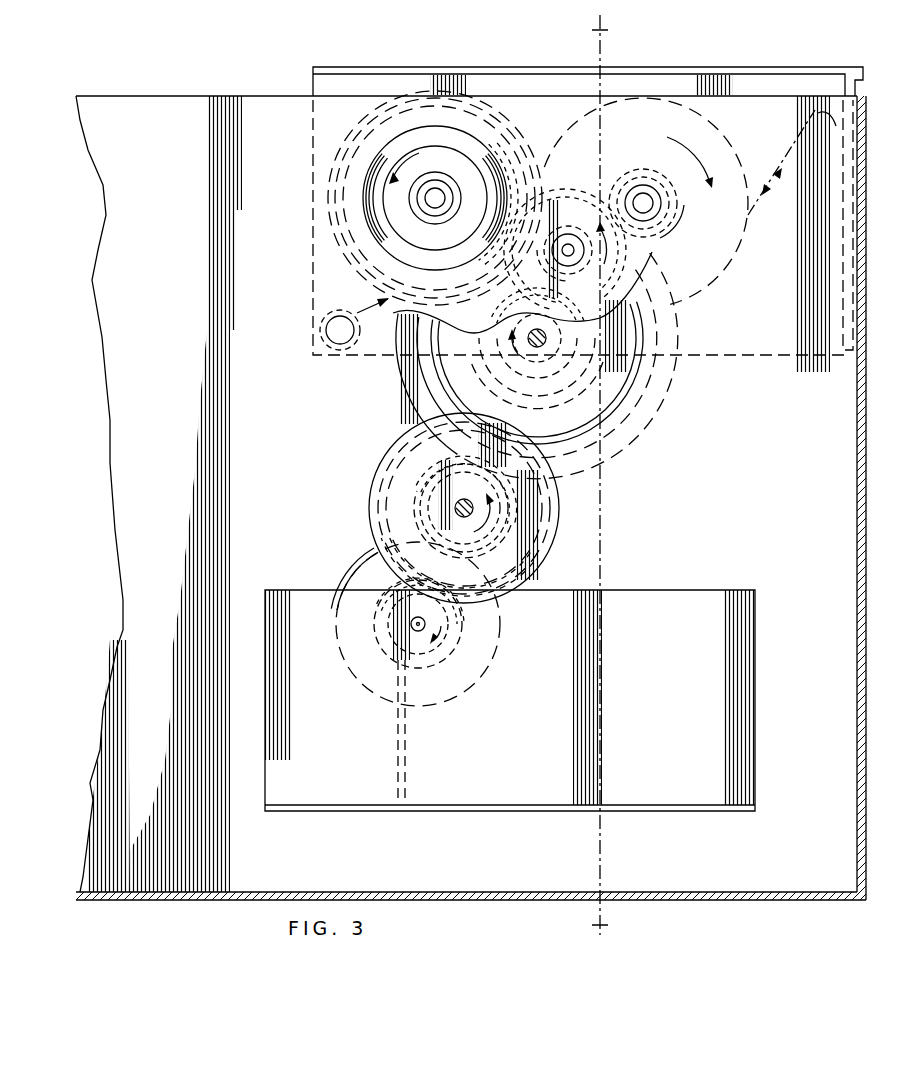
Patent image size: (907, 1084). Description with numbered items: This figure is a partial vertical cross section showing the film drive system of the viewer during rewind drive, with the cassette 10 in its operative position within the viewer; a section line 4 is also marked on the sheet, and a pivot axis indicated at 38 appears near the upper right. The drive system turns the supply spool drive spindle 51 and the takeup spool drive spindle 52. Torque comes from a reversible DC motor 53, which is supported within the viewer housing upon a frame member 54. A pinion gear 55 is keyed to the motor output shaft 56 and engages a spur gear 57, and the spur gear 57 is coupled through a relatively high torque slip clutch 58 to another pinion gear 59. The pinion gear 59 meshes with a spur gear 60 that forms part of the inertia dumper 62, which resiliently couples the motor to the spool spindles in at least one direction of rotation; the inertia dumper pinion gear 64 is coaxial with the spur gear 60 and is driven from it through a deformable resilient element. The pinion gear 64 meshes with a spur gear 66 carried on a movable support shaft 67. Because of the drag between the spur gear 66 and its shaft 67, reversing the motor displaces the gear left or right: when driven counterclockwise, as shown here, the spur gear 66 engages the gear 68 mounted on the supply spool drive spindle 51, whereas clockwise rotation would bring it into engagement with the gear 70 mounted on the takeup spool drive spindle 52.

The section line 4- 4 is at (588, 28).
The cassette 10 is at (814, 62).
The pivot axis 38 is at (727, 225).
The supply spool drive spindle 51 is at (640, 197).
The takeup spool drive spindle 52 is at (440, 198).
The reversible DC motor 53 is at (352, 568).
The frame member 54 is at (708, 633).
The pinion gear 55 is at (362, 273).
The motor output shaft 56 is at (411, 625).
The spur gear 57 is at (537, 537).
The slip clutch 58 is at (574, 503).
The pinion gear 59 is at (410, 498).
The spur gear 60 is at (645, 404).
The inertia dumper 62 is at (396, 418).
The pinion gear 64 is at (537, 372).
The spur gear 66 is at (530, 272).
The movable support shaft 67 is at (541, 274).
The gear 68 is at (655, 210).
The gear 70 is at (362, 144).